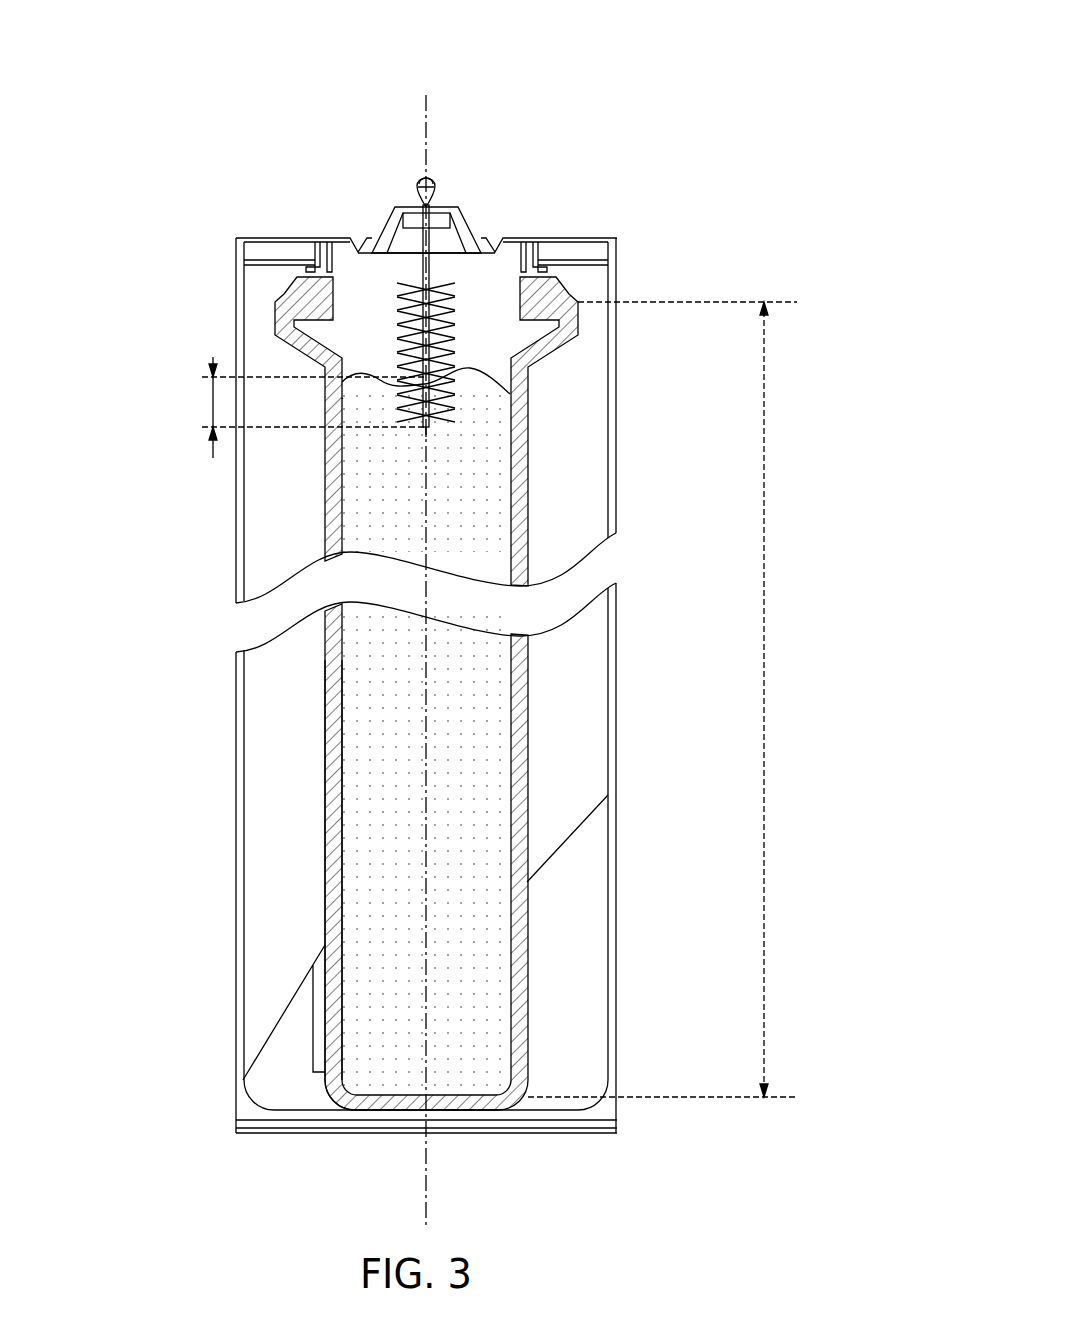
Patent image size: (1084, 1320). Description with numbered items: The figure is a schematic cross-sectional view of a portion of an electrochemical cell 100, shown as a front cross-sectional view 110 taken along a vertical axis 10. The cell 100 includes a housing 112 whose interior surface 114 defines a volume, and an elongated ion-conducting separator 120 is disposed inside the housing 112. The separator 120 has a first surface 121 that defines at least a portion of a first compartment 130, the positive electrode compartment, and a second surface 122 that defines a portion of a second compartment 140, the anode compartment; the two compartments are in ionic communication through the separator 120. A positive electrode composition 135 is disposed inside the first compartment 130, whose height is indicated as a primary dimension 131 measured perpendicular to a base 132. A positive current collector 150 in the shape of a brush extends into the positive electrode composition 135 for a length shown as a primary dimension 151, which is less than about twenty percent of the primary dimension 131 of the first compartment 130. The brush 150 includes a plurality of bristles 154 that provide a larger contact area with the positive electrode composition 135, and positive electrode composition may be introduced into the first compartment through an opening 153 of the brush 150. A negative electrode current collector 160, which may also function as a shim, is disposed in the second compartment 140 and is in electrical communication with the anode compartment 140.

The electrochemical cell 100 is at (692, 68).
The vertical axis 10 is at (428, 1170).
The front cross-sectional view 110 is at (620, 230).
The housing 112 is at (228, 701).
The interior surface 114 is at (244, 857).
The ion-conducting separator 120 is at (532, 742).
The first surface 121 is at (342, 934).
The second surface 122 is at (325, 778).
The first compartment 130 is at (492, 522).
The primary dimension of the first compartment 131 is at (766, 741).
The base 132 is at (335, 1108).
The positive electrode composition 135 is at (481, 490).
The second compartment 140 is at (550, 392).
The positive current collector 150 is at (437, 244).
The primary dimension of the extended portion of the positive current collector 151 is at (212, 410).
The opening 153 is at (434, 168).
The bristles 154 is at (402, 306).
The negative electrode current collector 160 is at (568, 838).